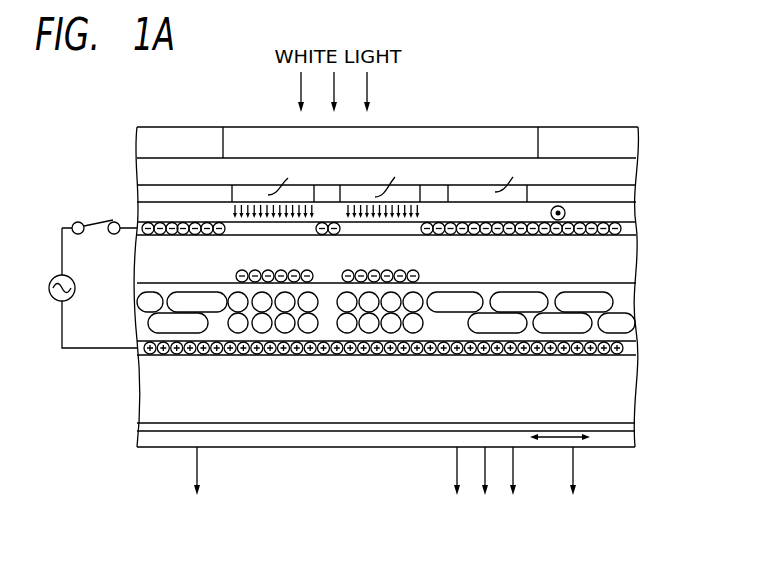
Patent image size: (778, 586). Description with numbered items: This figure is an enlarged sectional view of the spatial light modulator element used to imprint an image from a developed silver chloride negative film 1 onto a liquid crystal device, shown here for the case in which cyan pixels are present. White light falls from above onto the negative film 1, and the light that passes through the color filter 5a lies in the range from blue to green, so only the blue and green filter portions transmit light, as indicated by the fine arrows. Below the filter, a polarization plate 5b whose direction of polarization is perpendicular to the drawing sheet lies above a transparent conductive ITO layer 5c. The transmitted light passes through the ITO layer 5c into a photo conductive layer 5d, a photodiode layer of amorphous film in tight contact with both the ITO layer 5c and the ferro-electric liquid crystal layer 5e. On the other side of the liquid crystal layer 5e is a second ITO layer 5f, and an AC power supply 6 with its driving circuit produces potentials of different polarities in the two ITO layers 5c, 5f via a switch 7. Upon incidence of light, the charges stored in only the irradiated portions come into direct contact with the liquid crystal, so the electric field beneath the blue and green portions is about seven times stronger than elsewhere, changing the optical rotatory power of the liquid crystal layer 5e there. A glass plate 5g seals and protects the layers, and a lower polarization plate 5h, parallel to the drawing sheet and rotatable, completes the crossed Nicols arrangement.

The negative film 1 is at (632, 143).
The color filter 5a is at (617, 193).
The polarization plate 5b is at (628, 218).
The ITO layer 5c is at (633, 232).
The photo conductive layer 5d is at (628, 268).
The liquid crystal layer 5e is at (635, 305).
The ITO layer 5f is at (633, 348).
The glass plate 5g is at (625, 395).
The polarization plate 5h is at (628, 440).
The AC power supply 6 is at (75, 285).
The switch 7 is at (97, 222).